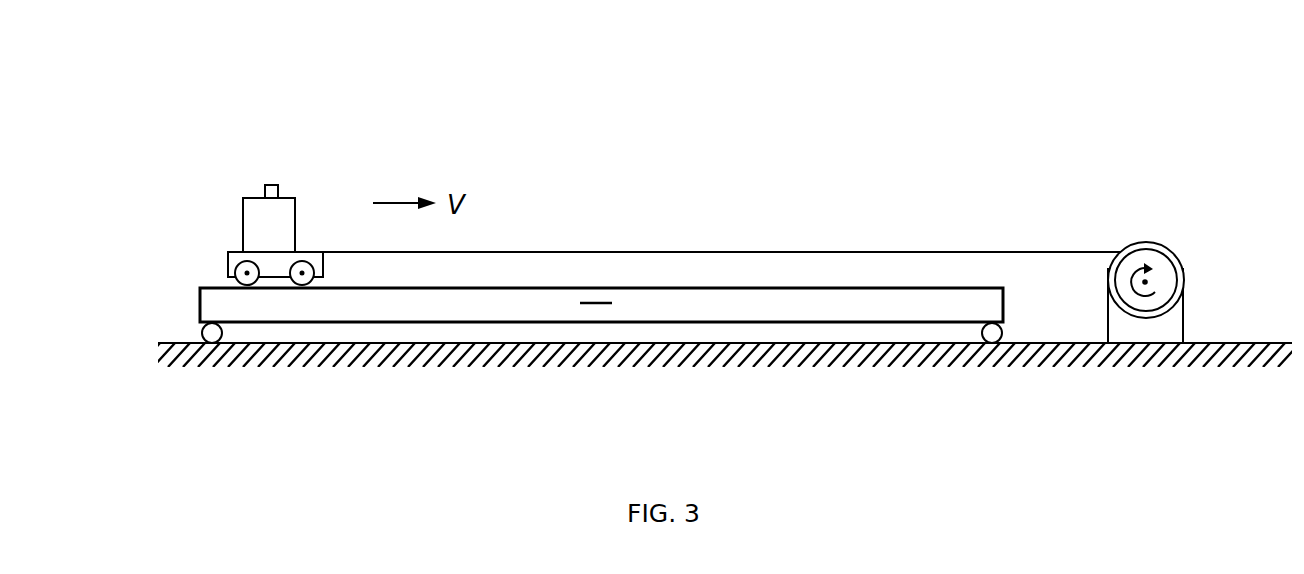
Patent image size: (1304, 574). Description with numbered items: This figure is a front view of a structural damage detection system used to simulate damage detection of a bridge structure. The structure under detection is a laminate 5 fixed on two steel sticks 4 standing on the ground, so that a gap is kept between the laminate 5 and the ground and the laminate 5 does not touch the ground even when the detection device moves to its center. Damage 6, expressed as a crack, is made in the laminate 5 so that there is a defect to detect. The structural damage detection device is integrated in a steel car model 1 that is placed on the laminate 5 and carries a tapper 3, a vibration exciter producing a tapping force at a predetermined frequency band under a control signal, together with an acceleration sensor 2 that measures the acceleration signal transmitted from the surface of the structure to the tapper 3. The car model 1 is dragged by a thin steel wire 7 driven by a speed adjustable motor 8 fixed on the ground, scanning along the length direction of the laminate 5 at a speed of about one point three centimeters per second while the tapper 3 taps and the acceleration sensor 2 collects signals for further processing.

The car model 1 is at (208, 230).
The acceleration sensor 2 is at (194, 186).
The tapper 3 is at (186, 128).
The steel sticks 4 is at (547, 296).
The laminate 5 is at (601, 195).
The damage 6 is at (651, 186).
The thin steel wire 7 is at (674, 161).
The speed adjustable motor 8 is at (1074, 206).